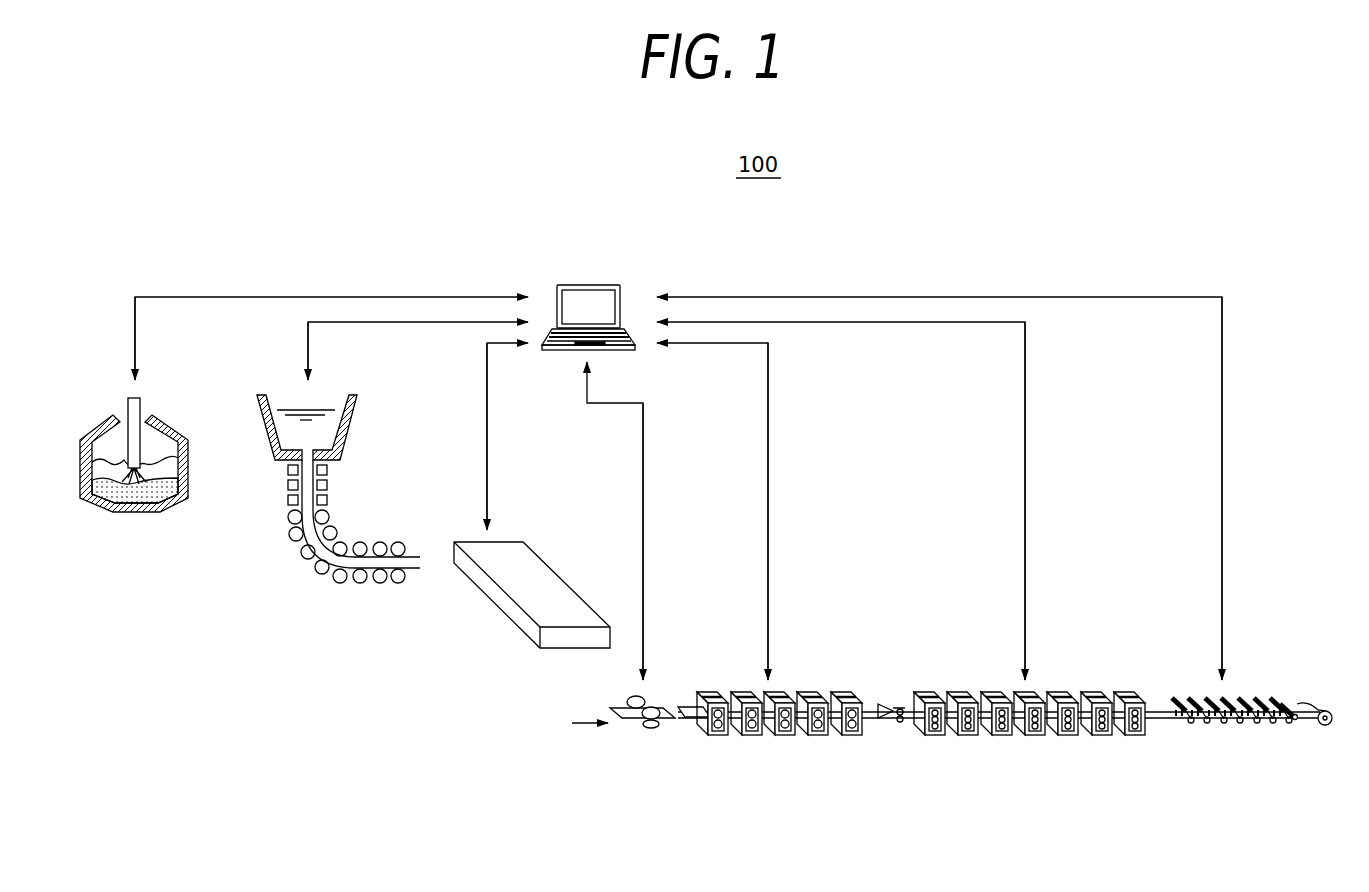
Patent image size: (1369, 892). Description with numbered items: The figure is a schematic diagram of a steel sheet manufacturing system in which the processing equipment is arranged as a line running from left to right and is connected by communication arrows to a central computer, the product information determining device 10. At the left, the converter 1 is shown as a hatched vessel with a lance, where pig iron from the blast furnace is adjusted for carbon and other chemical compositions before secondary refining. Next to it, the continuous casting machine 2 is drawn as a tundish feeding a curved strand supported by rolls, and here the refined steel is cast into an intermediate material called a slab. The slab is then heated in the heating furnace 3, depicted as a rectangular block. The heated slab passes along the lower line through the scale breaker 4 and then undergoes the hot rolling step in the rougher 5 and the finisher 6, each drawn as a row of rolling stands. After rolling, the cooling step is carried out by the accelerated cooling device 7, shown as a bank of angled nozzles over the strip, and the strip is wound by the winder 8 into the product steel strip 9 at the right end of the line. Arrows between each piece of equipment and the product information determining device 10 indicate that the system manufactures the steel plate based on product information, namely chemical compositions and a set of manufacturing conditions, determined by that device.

The converter 1 is at (133, 512).
The continuous casting machine 2 is at (297, 552).
The heating furnace 3 is at (533, 562).
The scale breaker 4 is at (650, 744).
The rougher 5 is at (782, 744).
The finisher 6 is at (1082, 680).
The accelerated cooling device 7 is at (1254, 683).
The winder 8 is at (1303, 728).
The product steel strip 9 is at (1332, 726).
The product information determining device 10 is at (590, 285).